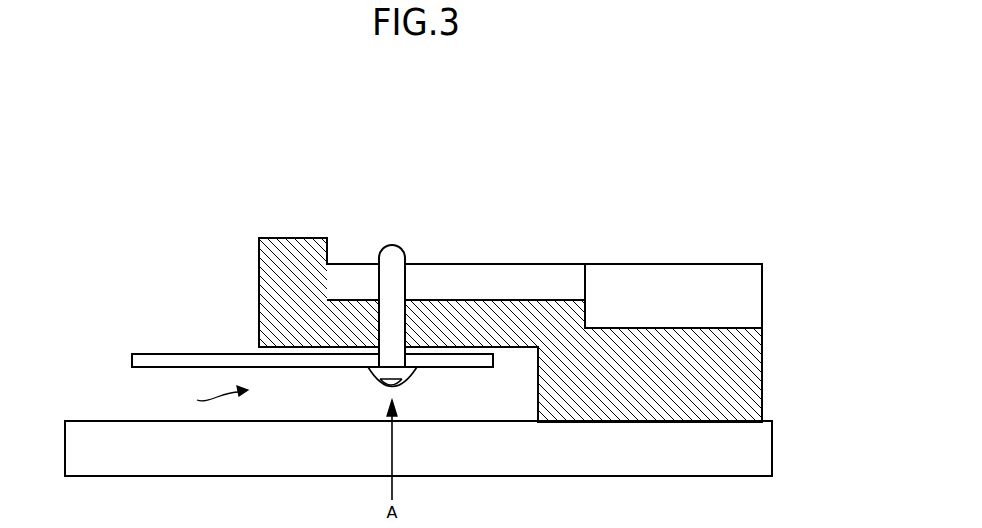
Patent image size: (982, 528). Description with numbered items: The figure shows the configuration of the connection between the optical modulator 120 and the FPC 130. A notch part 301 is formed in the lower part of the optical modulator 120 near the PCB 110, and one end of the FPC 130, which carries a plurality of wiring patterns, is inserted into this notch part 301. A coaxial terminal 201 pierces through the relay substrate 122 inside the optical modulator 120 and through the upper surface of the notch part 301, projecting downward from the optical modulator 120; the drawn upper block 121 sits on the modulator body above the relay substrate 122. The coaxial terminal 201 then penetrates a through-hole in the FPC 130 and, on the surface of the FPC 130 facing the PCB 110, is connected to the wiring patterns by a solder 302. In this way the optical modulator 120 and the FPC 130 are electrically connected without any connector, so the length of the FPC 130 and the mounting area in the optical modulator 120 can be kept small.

The PCB 110 is at (723, 477).
The optical modulator 120 is at (259, 248).
The piezoelectric element / upper block 121 is at (693, 263).
The relay substrate 122 is at (542, 263).
The FPC 130 is at (165, 353).
The coaxial terminal 201 is at (392, 245).
The notch part 301 is at (205, 399).
The solder 302 is at (413, 370).